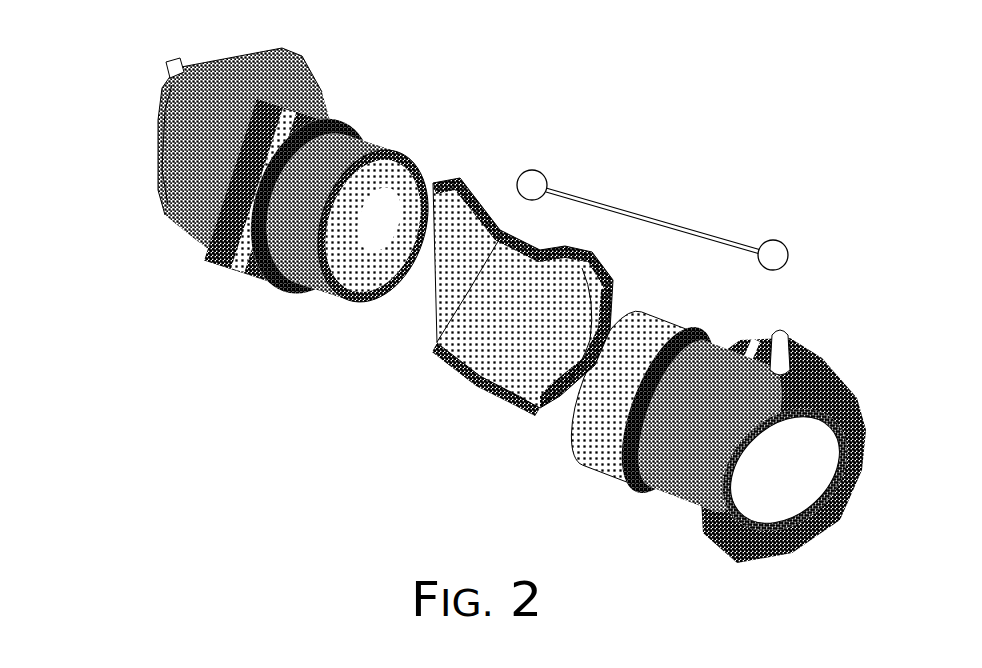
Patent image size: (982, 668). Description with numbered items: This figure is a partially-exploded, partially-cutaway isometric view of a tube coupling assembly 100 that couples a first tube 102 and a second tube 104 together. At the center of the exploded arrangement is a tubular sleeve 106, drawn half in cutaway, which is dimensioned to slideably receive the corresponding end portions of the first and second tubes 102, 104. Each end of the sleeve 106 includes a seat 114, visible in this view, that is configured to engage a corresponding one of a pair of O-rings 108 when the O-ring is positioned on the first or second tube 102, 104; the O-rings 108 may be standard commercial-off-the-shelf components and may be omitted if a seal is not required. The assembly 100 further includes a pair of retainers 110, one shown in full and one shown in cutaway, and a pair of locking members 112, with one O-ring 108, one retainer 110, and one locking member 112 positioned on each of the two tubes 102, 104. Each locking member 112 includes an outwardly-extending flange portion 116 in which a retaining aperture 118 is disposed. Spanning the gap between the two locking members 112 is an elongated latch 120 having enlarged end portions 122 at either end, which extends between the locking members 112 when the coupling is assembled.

The tube coupling assembly 100 is at (754, 63).
The first tube 102 is at (379, 196).
The second tube 104 is at (600, 413).
The tubular sleeve 106 is at (459, 331).
The O-rings 108 is at (479, 337).
The retainers 110 is at (482, 222).
The locking members 112 is at (467, 340).
The seat 114 is at (464, 351).
The flange portion 116 is at (532, 285).
The retaining aperture 118 is at (834, 310).
The elongated latch 120 is at (656, 203).
The enlarged end portions 122 is at (689, 202).